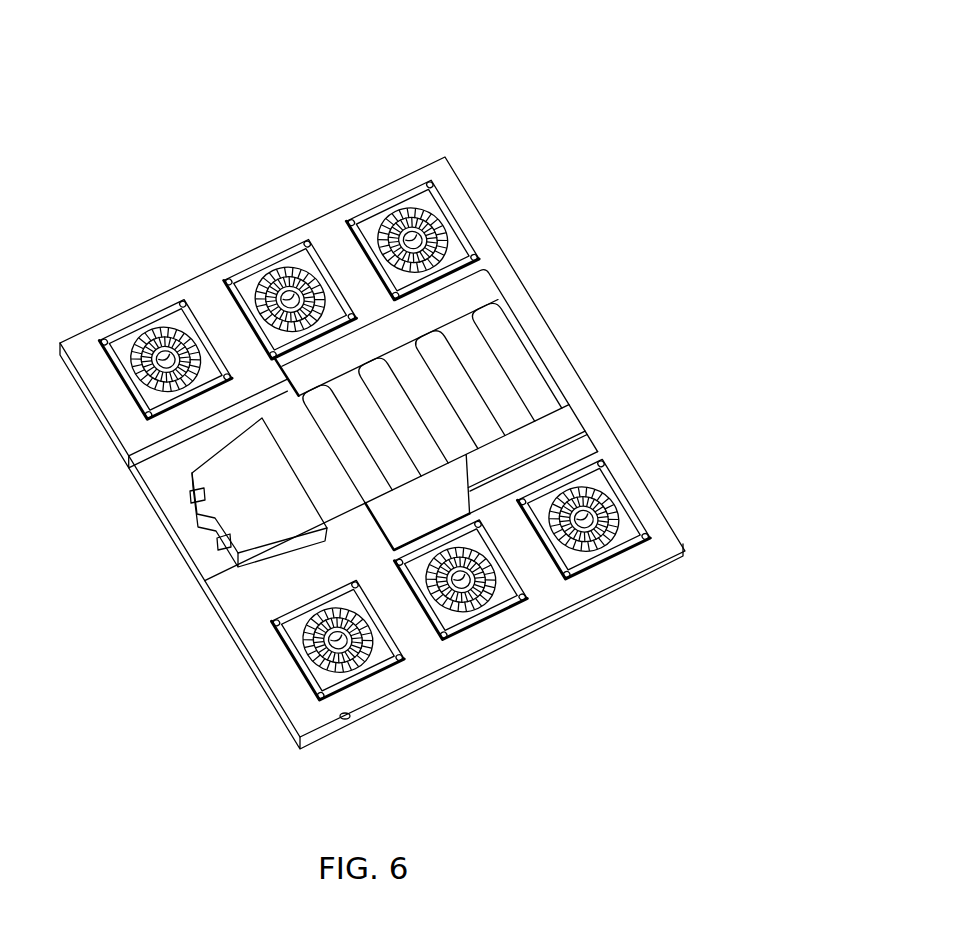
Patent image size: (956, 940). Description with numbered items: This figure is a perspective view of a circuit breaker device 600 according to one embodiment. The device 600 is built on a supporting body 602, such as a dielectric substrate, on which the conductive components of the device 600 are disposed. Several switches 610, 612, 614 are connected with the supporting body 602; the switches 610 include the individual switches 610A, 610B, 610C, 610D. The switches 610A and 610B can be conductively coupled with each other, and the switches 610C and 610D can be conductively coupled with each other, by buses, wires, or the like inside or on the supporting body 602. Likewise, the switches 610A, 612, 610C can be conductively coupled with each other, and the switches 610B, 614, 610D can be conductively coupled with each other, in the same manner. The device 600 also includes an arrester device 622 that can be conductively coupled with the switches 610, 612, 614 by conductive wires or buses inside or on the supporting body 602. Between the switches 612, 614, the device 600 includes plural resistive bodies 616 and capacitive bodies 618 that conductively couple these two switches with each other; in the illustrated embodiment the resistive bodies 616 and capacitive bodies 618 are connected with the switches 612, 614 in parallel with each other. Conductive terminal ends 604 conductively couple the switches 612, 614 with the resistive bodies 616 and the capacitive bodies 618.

The circuit breaker device 600 is at (380, 382).
The supporting body 602 is at (478, 202).
The conductive terminal ends 604 is at (477, 293).
The switches 610 is at (413, 205).
The switch 610A is at (137, 311).
The switch 610B is at (366, 692).
The switch 610C is at (384, 190).
The switch 610D is at (615, 570).
The switch 612 is at (261, 252).
The switch 614 is at (488, 630).
The resistive bodies 616 is at (453, 367).
The capacitive bodies 618 is at (498, 327).
The arrester device 622 is at (184, 505).